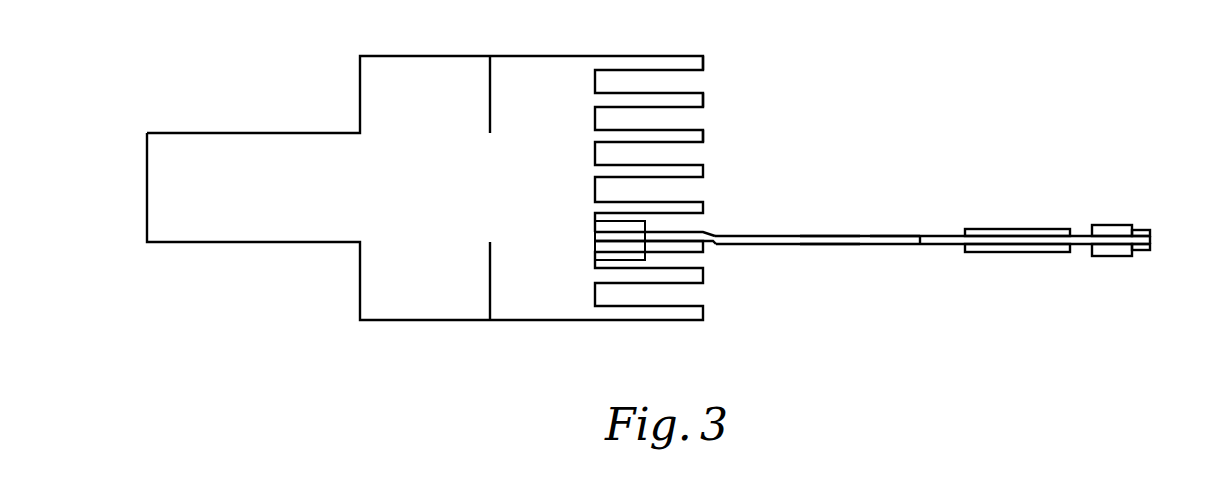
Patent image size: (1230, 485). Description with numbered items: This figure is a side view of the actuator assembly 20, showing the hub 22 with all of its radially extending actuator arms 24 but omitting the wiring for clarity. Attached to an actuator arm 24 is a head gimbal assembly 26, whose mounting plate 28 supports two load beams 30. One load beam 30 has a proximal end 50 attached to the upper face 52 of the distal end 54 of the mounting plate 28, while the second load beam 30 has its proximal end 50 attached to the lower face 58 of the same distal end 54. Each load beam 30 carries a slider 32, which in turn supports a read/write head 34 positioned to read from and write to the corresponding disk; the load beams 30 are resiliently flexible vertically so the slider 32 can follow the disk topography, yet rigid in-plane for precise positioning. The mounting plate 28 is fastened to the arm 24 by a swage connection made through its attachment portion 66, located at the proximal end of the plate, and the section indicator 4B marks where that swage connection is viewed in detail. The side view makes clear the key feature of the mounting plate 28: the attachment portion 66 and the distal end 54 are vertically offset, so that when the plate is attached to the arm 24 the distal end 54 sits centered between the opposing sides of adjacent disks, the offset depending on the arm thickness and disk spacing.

The comb body 20 is at (510, 328).
The hub 22 is at (383, 56).
The actuator arm 24 is at (703, 62).
The head gimbal assembly 26 is at (888, 309).
The mounting plate 28 is at (770, 245).
The load beam 30 is at (1018, 229).
The slider 32 is at (1113, 225).
The read/write head 34 is at (1138, 229).
The proximal end 50 is at (940, 235).
The upper face 52 is at (832, 235).
The distal end 54 is at (900, 235).
The lower face 58 is at (833, 245).
The attachment portion 66 is at (696, 231).
The section line 4B is at (595, 260).